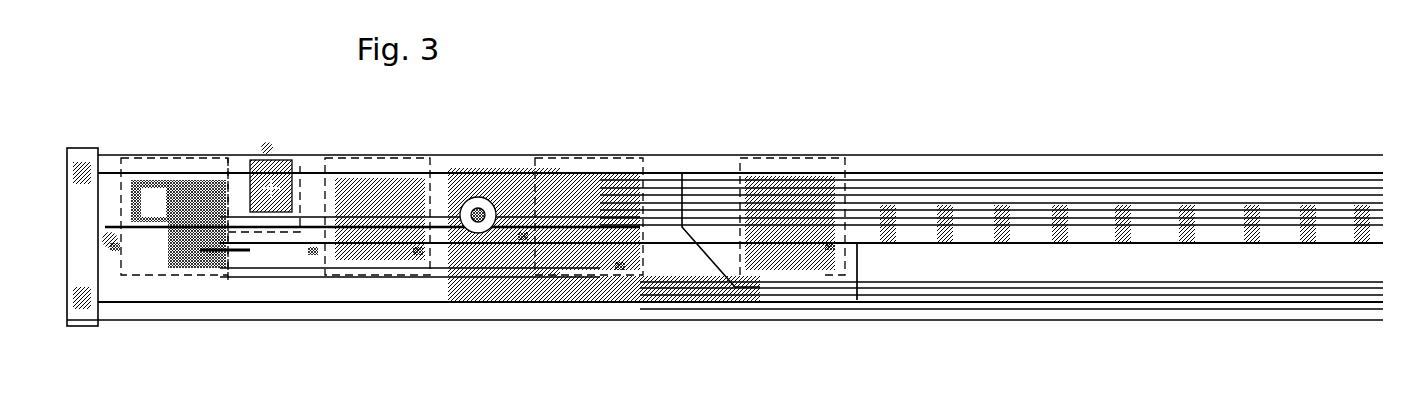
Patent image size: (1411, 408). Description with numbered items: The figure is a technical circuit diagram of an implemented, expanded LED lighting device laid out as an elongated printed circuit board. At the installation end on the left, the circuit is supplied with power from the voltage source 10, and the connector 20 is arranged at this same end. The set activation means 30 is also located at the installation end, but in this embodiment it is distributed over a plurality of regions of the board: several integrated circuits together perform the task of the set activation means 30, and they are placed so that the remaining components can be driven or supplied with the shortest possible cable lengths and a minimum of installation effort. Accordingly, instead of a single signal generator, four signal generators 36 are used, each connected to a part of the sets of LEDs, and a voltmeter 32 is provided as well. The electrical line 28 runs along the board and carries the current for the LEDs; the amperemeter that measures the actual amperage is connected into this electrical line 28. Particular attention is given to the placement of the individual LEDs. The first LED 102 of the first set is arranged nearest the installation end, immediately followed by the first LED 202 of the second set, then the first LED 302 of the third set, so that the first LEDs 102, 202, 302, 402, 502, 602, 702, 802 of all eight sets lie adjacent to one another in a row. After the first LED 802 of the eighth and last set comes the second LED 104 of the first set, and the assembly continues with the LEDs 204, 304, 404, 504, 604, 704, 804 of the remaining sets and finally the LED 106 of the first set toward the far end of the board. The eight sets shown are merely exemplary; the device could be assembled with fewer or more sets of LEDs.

The voltage source 10 is at (76, 148).
The connector 20 is at (278, 156).
The electrical line 28 is at (857, 300).
The set activation means 30 is at (143, 156).
The voltmeter 32 is at (478, 222).
The signal generator 36 is at (183, 198).
The first LED of the first set of LEDs 102 is at (115, 246).
The first LED of the second set of LEDs 202 is at (212, 250).
The first LED of the third set of LEDs 302 is at (313, 250).
The first LED of the fourth set of LEDs 402 is at (418, 250).
The first LED of the fifth set of LEDs 502 is at (523, 235).
The first LED of the sixth set of LEDs 602 is at (620, 265).
The first LED of the seventh set of LEDs 702 is at (727, 237).
The first LED of the eighth set of LEDs 802 is at (830, 245).
The second LED of the first set of LEDs 104 is at (888, 243).
The second LED of the second set of LEDs 204 is at (945, 243).
The second LED of the third set of LEDs 304 is at (1002, 243).
The second LED of the fourth set of LEDs 404 is at (1060, 243).
The second LED of the fifth set of LEDs 504 is at (1123, 243).
The second LED of the sixth set of LEDs 604 is at (1187, 243).
The second LED of the seventh set of LEDs 704 is at (1252, 243).
The second LED of the eighth set of LEDs 804 is at (1308, 243).
The third LED of the first set of LEDs 106 is at (1362, 243).